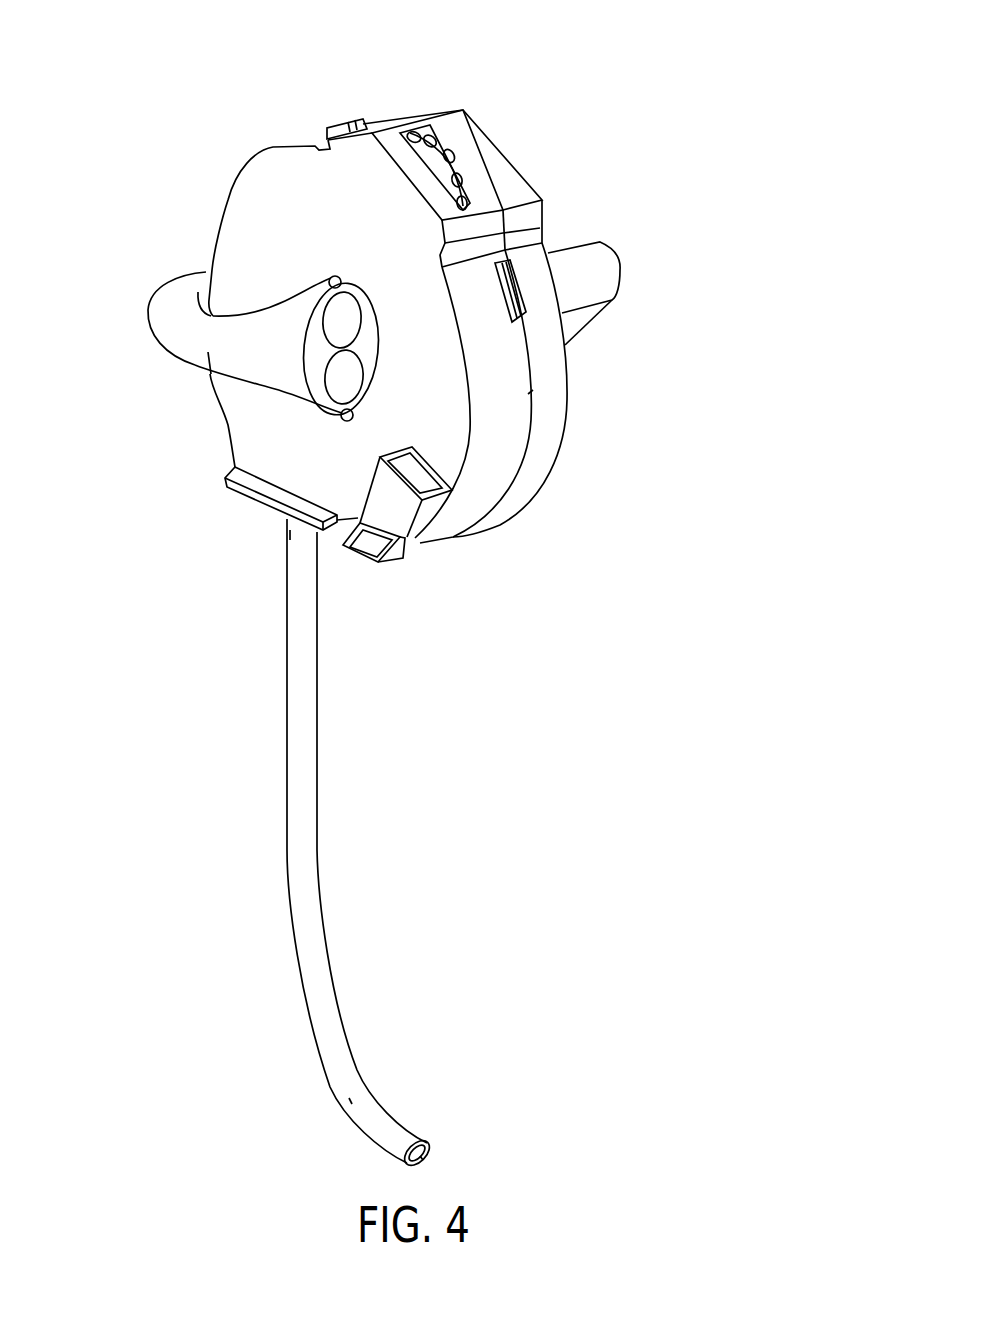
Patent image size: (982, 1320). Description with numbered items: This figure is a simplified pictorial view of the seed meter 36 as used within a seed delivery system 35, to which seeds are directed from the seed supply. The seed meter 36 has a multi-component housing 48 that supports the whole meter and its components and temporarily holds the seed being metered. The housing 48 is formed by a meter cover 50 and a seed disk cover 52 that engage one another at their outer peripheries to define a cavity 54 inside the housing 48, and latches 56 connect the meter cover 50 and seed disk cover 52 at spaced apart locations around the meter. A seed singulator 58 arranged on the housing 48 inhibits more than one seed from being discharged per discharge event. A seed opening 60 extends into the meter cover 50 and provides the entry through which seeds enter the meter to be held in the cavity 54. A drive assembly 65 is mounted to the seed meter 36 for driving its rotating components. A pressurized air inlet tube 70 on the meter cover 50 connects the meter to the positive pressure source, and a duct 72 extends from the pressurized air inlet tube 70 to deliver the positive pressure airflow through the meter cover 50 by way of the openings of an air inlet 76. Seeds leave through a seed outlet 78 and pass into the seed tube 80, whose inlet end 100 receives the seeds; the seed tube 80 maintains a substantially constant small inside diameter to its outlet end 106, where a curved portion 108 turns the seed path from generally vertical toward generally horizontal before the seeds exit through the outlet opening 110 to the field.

The seed delivery system 35 is at (478, 92).
The seed meter 36 is at (424, 108).
The housing 48 is at (543, 353).
The meter cover 50 is at (300, 172).
The seed disk cover 52 is at (538, 458).
The cavity 54 is at (533, 390).
The latches 56 is at (337, 122).
The seed singulator 58 is at (485, 162).
The seed opening 60 is at (420, 475).
The drive assembly 65 is at (374, 300).
The pressurized air inlet tube 70 is at (210, 270).
The duct 72 is at (213, 343).
The air inlet 76 is at (345, 307).
The seed outlet 78 is at (237, 503).
The seed tube 80 is at (287, 700).
The inlet end 100 is at (302, 555).
The outlet end 106 is at (401, 1126).
The curved portion 108 is at (350, 1100).
The outlet opening 110 is at (423, 1160).